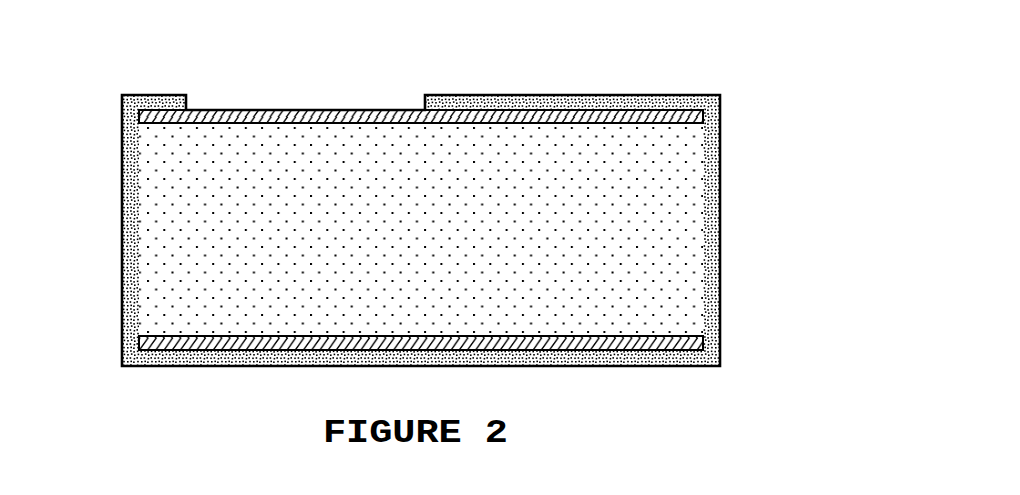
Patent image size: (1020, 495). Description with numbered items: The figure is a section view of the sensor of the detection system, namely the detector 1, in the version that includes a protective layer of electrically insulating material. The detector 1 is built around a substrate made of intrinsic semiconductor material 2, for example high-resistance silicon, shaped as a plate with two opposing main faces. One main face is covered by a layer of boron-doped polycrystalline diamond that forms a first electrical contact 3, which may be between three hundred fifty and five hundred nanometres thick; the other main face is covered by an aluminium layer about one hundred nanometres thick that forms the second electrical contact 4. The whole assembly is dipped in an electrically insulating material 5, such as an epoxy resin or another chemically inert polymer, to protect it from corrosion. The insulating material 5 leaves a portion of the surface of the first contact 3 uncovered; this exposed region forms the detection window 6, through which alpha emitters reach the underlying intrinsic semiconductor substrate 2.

The detector 1 is at (448, 218).
The substrate made of intrinsic semiconductor material 2 is at (685, 171).
The first electrical contact 3 is at (676, 118).
The second electrical contact 4 is at (678, 342).
The electrically insulating material 5 is at (130, 160).
The detection window 6 is at (308, 99).